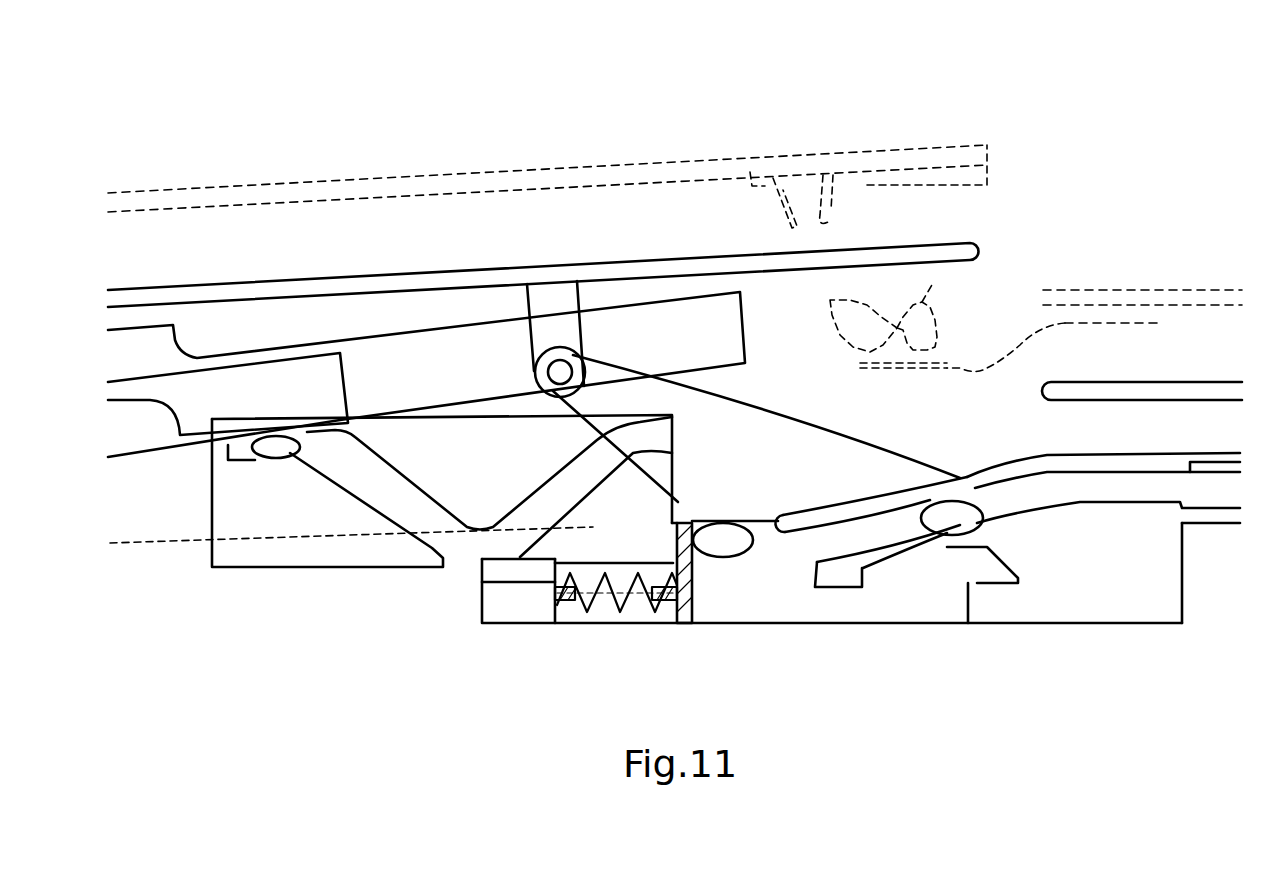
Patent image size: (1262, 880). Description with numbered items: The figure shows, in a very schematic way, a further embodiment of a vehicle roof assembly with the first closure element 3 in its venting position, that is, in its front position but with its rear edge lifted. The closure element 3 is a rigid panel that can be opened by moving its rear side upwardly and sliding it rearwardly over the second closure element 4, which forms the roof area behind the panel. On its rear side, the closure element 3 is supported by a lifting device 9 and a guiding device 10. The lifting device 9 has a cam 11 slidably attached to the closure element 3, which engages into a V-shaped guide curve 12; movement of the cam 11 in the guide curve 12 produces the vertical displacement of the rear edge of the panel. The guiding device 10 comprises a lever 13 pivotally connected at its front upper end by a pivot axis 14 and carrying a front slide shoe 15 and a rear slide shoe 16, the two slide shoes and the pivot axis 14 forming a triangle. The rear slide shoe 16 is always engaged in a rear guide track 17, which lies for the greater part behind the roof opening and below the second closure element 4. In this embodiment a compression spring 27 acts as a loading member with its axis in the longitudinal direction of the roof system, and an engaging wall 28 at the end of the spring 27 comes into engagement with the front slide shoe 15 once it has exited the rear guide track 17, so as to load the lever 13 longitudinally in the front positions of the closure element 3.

The first closure element 3 is at (460, 270).
The second closure element 4 is at (1185, 395).
The lifting device 9 is at (170, 593).
The guiding device 10 is at (668, 633).
The cam 11 is at (283, 452).
The guide curve 12 is at (412, 513).
The lever 13 is at (807, 460).
The pivot axis 14 is at (567, 367).
The front slide shoe 15 is at (732, 537).
The rear slide shoe 16 is at (957, 513).
The rear guide track 17 is at (1108, 487).
The spring 27 is at (607, 602).
The engaging wall 28 is at (693, 597).